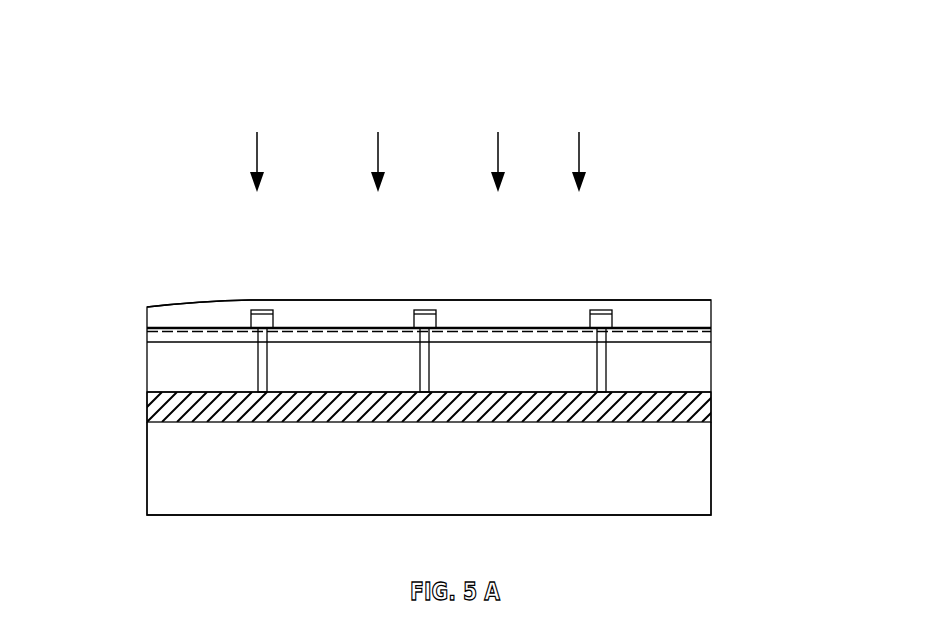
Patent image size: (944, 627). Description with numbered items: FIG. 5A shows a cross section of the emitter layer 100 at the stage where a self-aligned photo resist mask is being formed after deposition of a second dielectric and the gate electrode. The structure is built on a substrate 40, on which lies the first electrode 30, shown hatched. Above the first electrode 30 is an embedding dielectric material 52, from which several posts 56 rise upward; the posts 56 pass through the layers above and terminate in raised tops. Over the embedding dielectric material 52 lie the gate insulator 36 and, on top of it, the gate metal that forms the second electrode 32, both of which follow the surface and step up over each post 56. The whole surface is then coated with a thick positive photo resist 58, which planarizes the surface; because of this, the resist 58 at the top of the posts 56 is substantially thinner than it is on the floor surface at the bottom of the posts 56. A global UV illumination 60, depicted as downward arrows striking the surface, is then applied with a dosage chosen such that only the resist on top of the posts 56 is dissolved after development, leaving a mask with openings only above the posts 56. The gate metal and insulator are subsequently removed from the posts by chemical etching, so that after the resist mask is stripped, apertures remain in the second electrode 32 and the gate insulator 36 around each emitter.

The emitter layer 100 is at (128, 378).
The substrate 40 is at (477, 480).
The first electrode 30 is at (308, 402).
The embedding dielectric material 52 is at (690, 364).
The gate insulator 36 is at (187, 337).
The second electrode 32 is at (373, 327).
The photo resist 58 is at (668, 317).
The post 56 is at (583, 282).
The UV illumination 60 is at (513, 78).